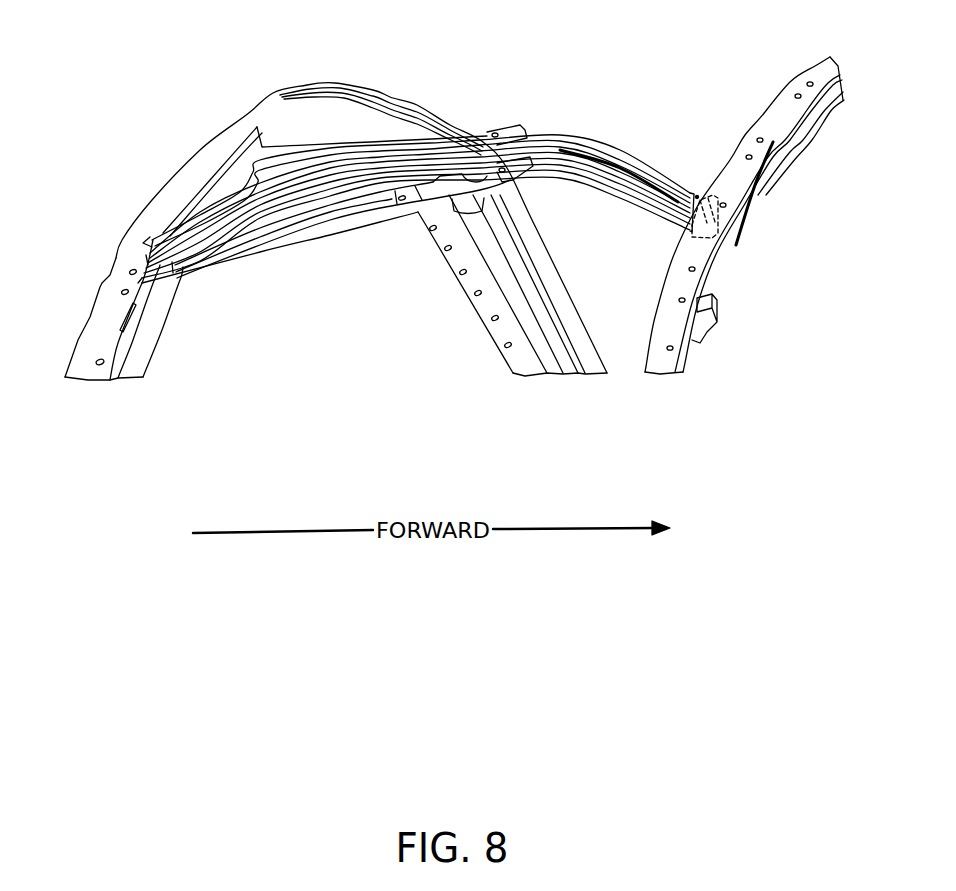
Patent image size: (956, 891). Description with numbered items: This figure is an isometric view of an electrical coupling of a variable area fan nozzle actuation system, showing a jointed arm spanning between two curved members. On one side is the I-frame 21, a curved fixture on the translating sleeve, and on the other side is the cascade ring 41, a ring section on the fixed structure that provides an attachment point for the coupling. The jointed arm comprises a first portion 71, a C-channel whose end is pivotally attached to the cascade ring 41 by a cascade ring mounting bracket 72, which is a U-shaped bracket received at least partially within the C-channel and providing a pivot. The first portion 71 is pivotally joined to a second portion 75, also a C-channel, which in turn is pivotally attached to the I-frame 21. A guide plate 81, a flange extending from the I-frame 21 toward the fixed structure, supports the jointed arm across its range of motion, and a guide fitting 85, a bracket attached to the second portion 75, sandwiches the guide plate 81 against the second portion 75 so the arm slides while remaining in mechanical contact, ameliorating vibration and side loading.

The I-frame 21 is at (193, 160).
The cascade ring 41 is at (773, 157).
The first portion 71 is at (420, 208).
The cascade ring mounting bracket 72 is at (715, 218).
The second portion 75 is at (305, 178).
The guide plate 81 is at (380, 217).
The guide fitting 85 is at (468, 207).